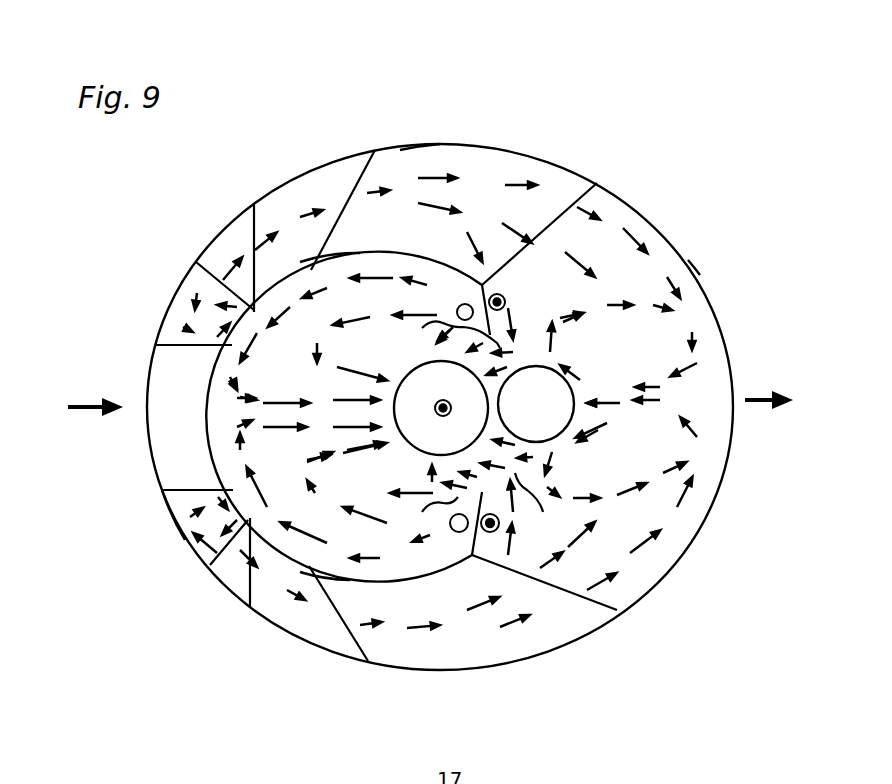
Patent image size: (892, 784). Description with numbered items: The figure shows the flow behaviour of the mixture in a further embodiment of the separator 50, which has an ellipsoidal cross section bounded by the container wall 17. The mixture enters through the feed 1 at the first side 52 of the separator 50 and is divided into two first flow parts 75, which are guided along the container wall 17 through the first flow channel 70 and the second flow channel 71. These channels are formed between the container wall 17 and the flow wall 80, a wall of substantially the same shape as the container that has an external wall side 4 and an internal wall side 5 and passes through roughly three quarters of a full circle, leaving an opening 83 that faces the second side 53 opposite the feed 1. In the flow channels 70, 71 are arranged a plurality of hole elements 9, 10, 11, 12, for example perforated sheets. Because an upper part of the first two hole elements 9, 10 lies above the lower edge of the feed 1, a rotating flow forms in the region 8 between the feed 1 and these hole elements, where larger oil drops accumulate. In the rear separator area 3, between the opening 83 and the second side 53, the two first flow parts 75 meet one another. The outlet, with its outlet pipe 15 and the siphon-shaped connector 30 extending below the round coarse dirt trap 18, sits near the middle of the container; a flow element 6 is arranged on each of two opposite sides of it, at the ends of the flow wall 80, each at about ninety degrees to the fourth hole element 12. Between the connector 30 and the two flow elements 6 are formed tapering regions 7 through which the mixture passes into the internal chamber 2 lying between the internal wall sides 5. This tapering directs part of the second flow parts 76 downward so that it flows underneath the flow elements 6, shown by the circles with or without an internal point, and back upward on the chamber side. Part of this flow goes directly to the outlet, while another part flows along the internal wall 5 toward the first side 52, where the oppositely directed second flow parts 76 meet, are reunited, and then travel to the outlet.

The feed 1 is at (163, 375).
The internal chamber 2 is at (293, 378).
The rear separator area 3 is at (712, 410).
The external wall side 4 is at (362, 238).
The internal wall side 5 is at (335, 260).
The flow element 6 is at (499, 293).
The tapering region 7 is at (486, 371).
The region 8 is at (208, 334).
The hole element 9 is at (213, 262).
The hole element 10 is at (258, 212).
The hole element 11 is at (353, 176).
The hole element 12 is at (562, 200).
The outlet pipe 15 is at (436, 447).
The container wall 17 is at (420, 143).
The coarse dirt trap 18 is at (406, 370).
The connector 30 is at (548, 418).
The separator 50 is at (648, 180).
The first side 52 is at (172, 520).
The second side 53 is at (688, 262).
The first flow channel 70 is at (493, 202).
The second flow channel 71 is at (462, 603).
The first flow part 75 is at (375, 187).
The second flow part 76 is at (447, 426).
The flow wall 80 is at (267, 532).
The opening 83 is at (535, 510).